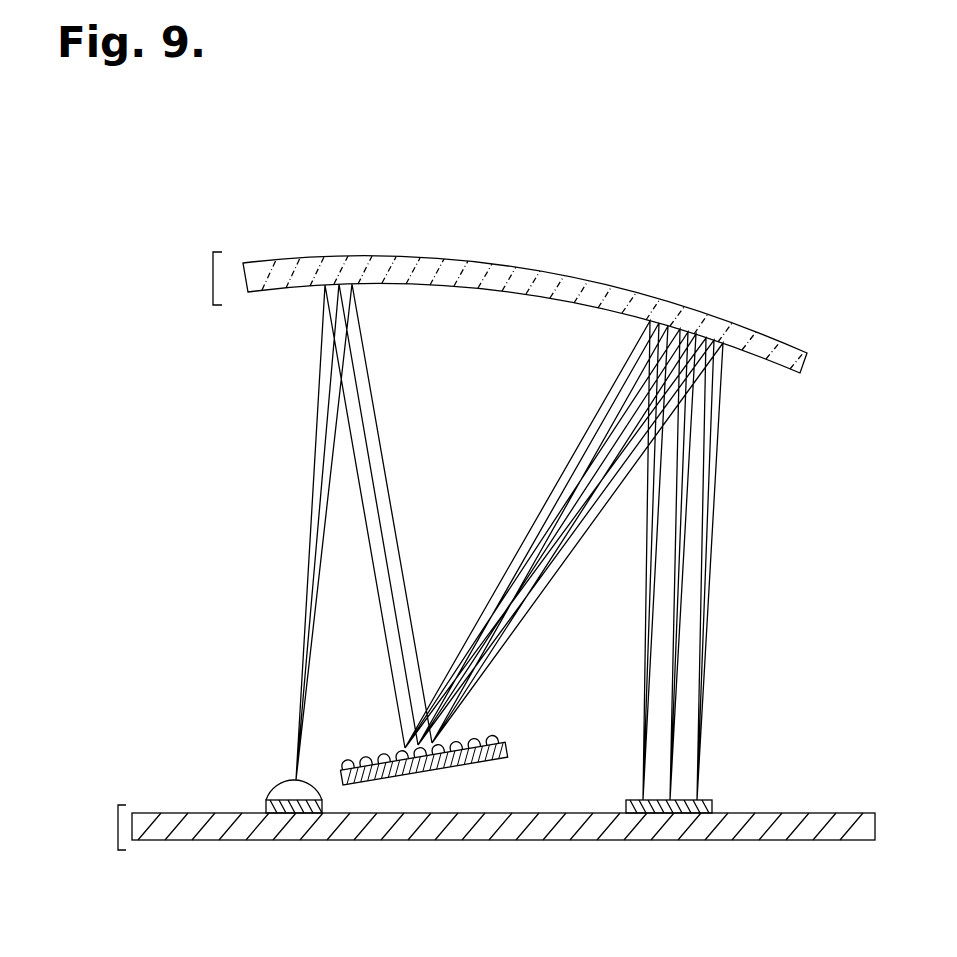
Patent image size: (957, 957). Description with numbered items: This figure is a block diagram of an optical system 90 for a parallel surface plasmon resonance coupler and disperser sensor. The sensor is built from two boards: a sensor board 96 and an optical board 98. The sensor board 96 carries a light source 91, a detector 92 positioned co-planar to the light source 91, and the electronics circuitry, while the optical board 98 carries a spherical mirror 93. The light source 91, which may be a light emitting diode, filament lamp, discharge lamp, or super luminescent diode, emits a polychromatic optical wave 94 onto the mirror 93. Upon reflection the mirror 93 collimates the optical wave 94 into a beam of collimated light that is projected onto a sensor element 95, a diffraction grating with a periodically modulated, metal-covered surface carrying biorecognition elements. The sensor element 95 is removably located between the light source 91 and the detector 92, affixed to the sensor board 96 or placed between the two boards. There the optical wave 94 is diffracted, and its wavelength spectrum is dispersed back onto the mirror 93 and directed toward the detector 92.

The optical system 90 is at (188, 111).
The light source 91 is at (265, 803).
The detector 92 is at (625, 803).
The spherical mirror 93 is at (810, 360).
The optical wave 94 is at (303, 577).
The sensor element 95 is at (508, 742).
The sensor board 96 is at (113, 828).
The optical board 98 is at (213, 279).